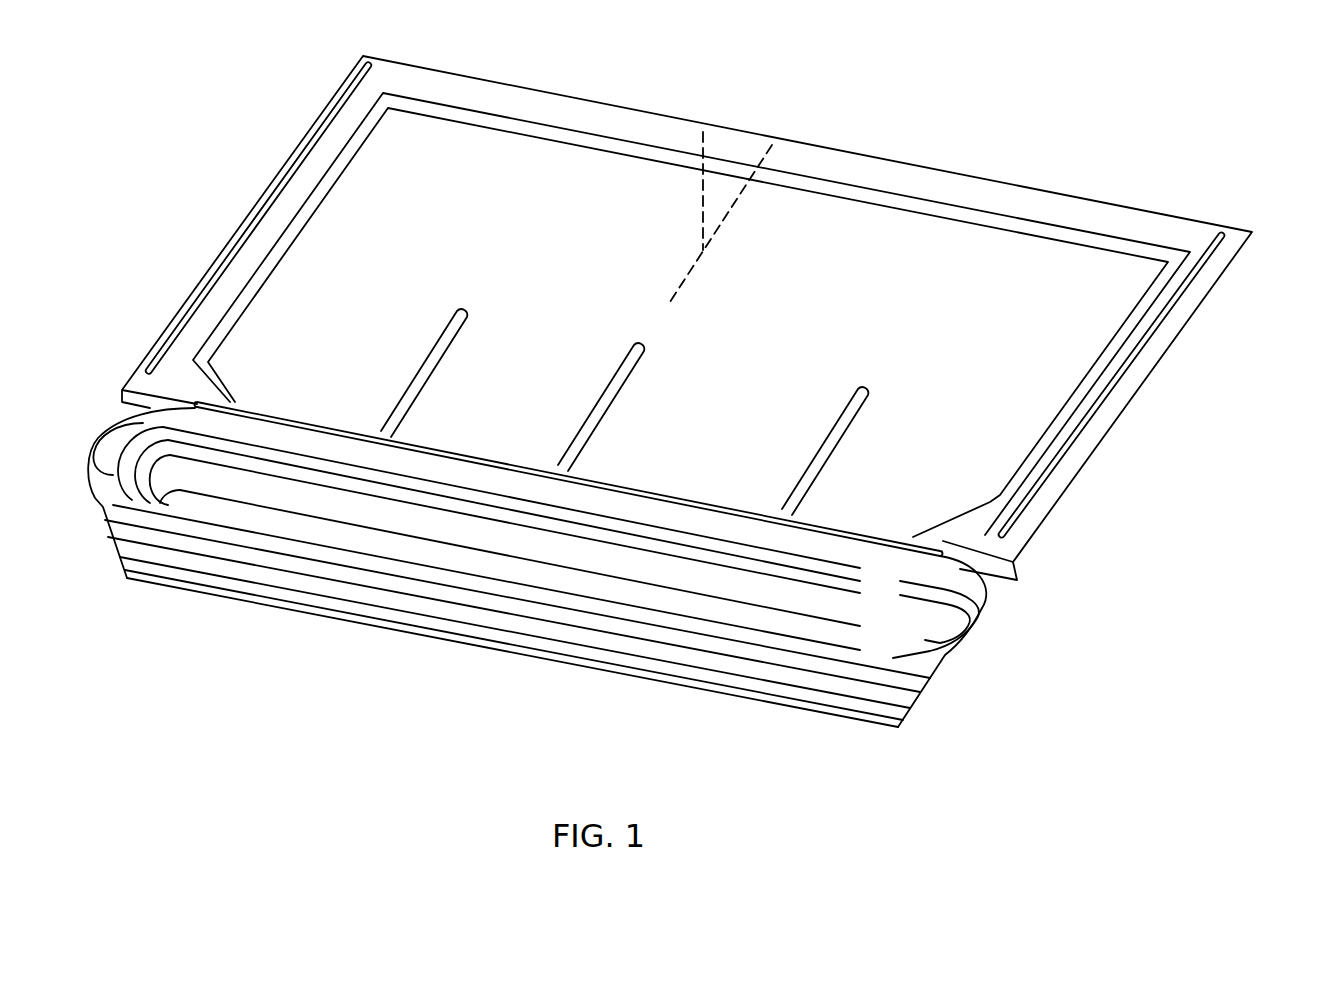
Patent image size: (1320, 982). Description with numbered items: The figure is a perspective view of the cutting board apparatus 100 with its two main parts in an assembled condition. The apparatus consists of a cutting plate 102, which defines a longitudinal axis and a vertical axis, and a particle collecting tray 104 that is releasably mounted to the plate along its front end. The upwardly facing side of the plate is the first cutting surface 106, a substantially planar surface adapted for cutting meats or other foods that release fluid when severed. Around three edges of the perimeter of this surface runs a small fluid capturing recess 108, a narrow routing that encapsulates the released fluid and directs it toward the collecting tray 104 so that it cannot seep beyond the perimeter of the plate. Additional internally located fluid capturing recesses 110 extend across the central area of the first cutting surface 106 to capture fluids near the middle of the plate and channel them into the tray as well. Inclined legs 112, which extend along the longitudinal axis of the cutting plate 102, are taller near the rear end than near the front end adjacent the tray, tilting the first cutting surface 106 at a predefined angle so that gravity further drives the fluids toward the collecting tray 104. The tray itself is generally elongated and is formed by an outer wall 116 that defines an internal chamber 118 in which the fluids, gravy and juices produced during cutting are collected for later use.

The cutting board apparatus 100 is at (902, 132).
The cutting plate 102 is at (925, 281).
The collecting tray 104 is at (768, 733).
The first cutting surface 106 is at (757, 351).
The fluid capturing recess 108 is at (350, 145).
The internally located fluid capturing recesses 110 is at (427, 378).
The inclined legs 112 is at (260, 222).
The outer wall 116 is at (317, 583).
The internal chamber 118 is at (855, 608).